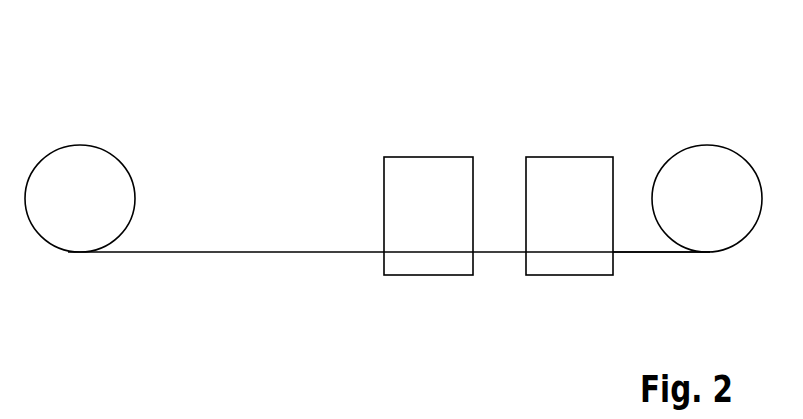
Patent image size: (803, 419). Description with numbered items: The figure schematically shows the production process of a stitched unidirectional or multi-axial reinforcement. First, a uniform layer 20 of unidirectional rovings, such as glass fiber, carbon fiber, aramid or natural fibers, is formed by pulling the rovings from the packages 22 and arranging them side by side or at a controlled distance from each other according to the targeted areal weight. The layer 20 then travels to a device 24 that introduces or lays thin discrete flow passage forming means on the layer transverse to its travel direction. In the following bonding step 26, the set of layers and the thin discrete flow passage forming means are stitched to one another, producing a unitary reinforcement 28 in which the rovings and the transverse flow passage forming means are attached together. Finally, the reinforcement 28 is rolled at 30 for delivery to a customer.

The uniform layer of unidirectional rovings 20 is at (157, 253).
The packages 22 is at (62, 170).
The device introducing or laying thin discrete flow passage forming means 24 is at (412, 183).
The bonding step 26 is at (570, 186).
The unitary reinforcement 28 is at (665, 253).
The rolling 30 is at (702, 182).